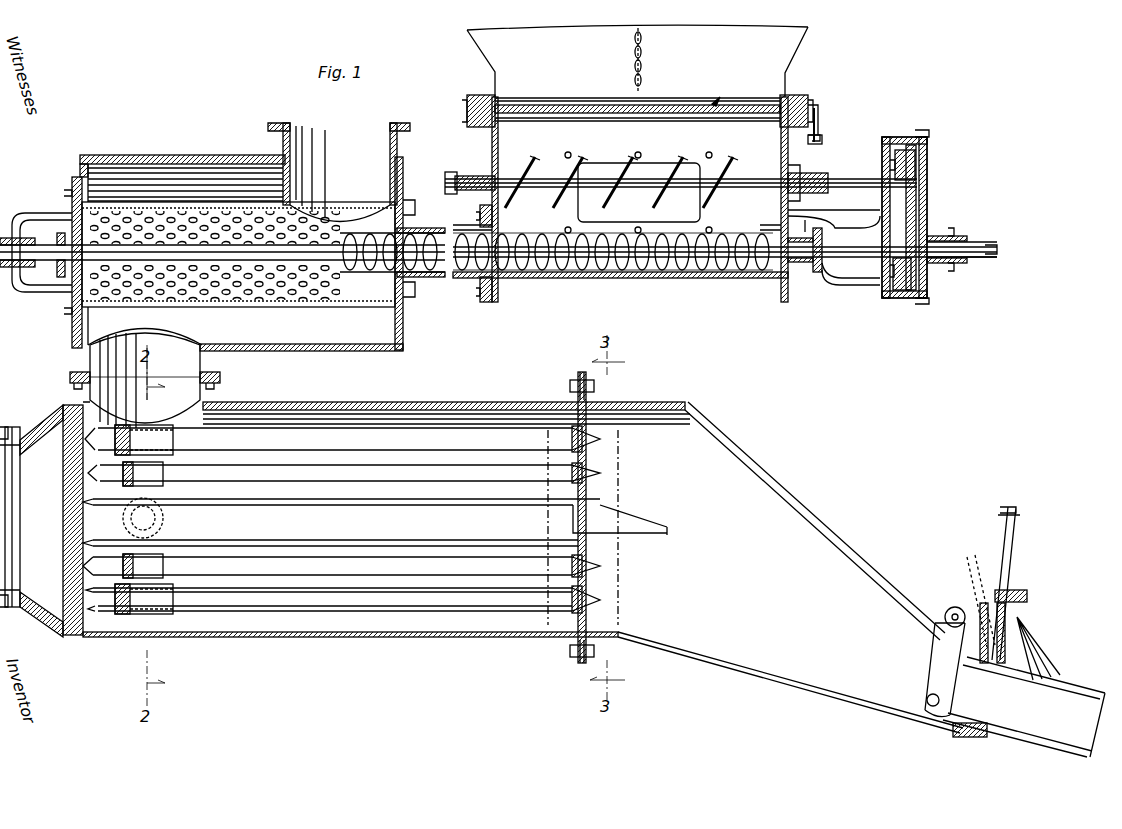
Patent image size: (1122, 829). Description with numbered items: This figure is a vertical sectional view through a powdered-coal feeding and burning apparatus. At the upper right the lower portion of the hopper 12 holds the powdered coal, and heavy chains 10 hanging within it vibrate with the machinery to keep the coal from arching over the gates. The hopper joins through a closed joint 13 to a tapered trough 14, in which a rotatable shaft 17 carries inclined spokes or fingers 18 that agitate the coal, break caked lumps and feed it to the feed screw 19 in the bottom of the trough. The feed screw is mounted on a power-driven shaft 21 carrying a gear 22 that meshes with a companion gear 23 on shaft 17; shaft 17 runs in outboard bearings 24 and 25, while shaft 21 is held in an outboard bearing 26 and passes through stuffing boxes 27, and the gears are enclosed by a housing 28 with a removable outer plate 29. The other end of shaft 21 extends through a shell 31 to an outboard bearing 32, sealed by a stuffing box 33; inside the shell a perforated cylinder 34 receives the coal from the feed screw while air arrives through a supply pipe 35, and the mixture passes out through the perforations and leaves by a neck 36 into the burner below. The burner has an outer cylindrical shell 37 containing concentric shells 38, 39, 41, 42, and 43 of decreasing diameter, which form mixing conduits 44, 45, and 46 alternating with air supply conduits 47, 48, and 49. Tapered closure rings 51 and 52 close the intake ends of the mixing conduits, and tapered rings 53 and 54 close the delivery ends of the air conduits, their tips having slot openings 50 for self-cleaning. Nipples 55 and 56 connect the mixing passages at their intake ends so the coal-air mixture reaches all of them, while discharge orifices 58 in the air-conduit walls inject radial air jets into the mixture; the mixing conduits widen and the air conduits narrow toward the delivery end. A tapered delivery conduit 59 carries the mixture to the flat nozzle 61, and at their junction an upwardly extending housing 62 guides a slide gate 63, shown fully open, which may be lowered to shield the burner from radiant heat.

The heavy chain 10 is at (643, 62).
The hopper 12 is at (800, 44).
The closed joint 13 is at (810, 100).
The tapered trough 14 is at (781, 132).
The rotatable shaft 17 is at (786, 183).
The spokes or fingers 18 is at (648, 166).
The feed screw 19 is at (690, 270).
The shaft 21 is at (962, 260).
The gear 22 is at (910, 298).
The companion gear 23 is at (927, 162).
The outboard bearing 24 is at (815, 195).
The outboard bearing 25 is at (478, 176).
The outboard bearing 26 is at (860, 285).
The stuffing boxes 27 is at (818, 272).
The housing 28 is at (893, 137).
The outer plate 29 is at (927, 191).
The shell 31 is at (150, 157).
The outboard bearing 32 is at (20, 292).
The stuffing box 33 is at (70, 282).
The perforated cylinder 34 is at (217, 205).
The supply pipe 35 is at (310, 124).
The neck 36 is at (70, 377).
The outer cylindrical shell 37 is at (378, 637).
The concentric shell 38 is at (325, 612).
The concentric shell 39 is at (290, 593).
The concentric shell 41 is at (262, 572).
The concentric shell 42 is at (300, 560).
The concentric shell 43 is at (348, 540).
The mixing conduit 44 is at (447, 638).
The mixing conduit 45 is at (410, 578).
The mixing conduit 46 is at (452, 546).
The air supply conduit 47 is at (495, 612).
The air supply conduit 48 is at (505, 566).
The central air conduit 49 is at (515, 540).
The slot openings 50 is at (603, 600).
The tapered closure ring 51 is at (83, 552).
The tapered closure ring 52 is at (83, 588).
The tapered ring 53 is at (603, 601).
The tapered ring 54 is at (602, 568).
The nipple 55 is at (175, 440).
The nipple 56 is at (150, 556).
The discharge orifices 58 is at (448, 450).
The tapered delivery conduit 59 is at (770, 676).
The flat nozzle 61 is at (1092, 757).
The gate guiding housing 62 is at (1022, 612).
The slide gate 63 is at (993, 668).